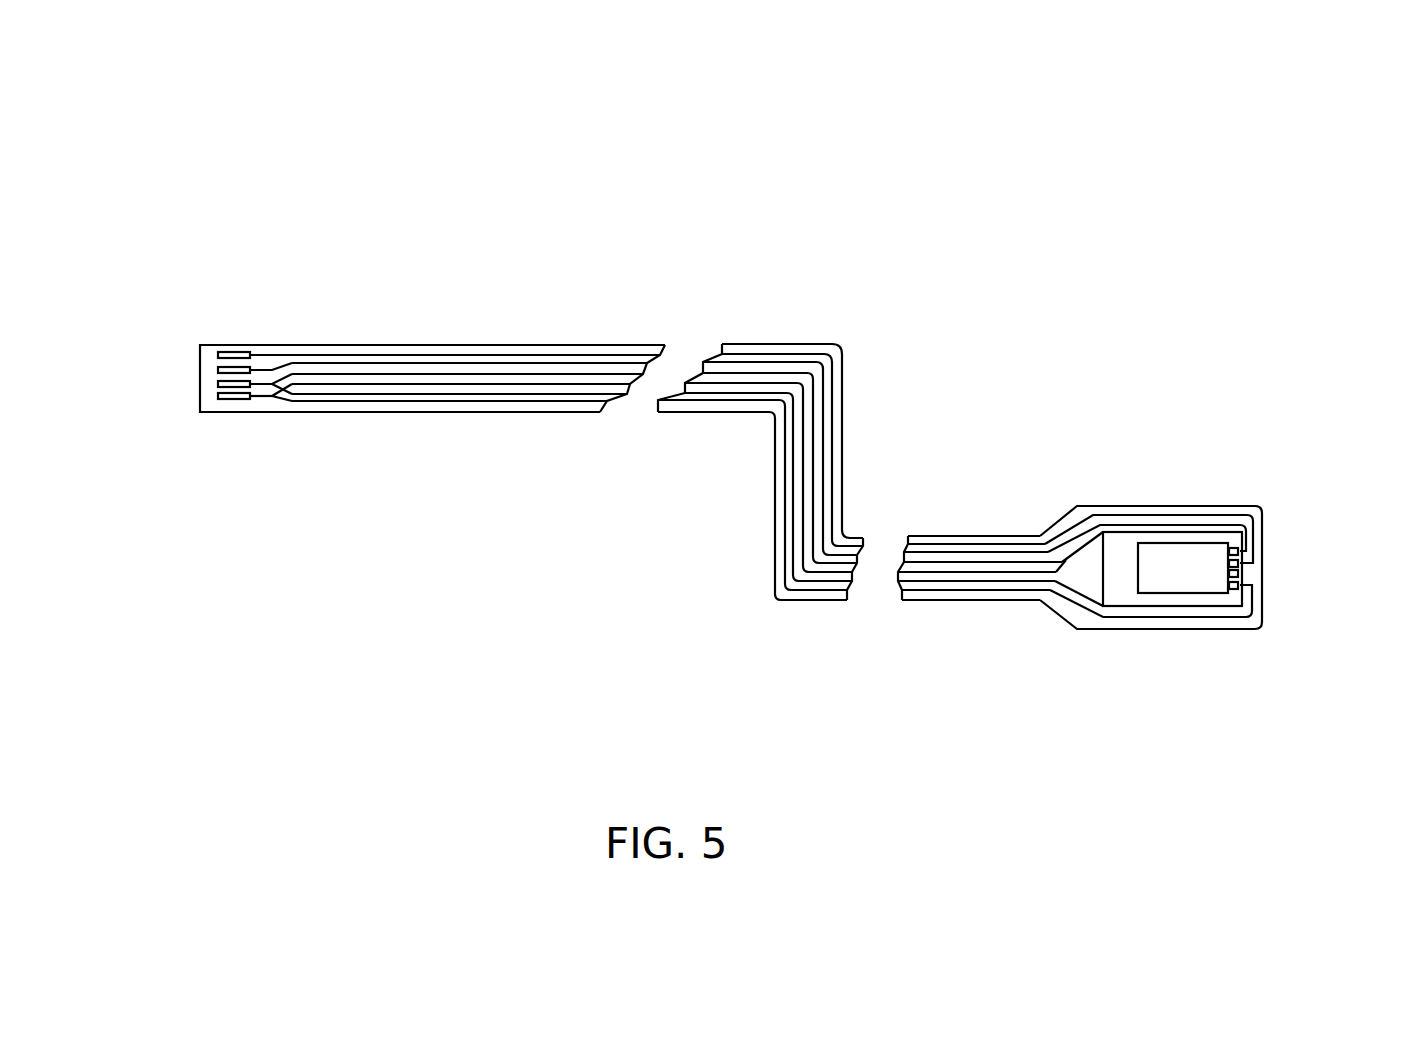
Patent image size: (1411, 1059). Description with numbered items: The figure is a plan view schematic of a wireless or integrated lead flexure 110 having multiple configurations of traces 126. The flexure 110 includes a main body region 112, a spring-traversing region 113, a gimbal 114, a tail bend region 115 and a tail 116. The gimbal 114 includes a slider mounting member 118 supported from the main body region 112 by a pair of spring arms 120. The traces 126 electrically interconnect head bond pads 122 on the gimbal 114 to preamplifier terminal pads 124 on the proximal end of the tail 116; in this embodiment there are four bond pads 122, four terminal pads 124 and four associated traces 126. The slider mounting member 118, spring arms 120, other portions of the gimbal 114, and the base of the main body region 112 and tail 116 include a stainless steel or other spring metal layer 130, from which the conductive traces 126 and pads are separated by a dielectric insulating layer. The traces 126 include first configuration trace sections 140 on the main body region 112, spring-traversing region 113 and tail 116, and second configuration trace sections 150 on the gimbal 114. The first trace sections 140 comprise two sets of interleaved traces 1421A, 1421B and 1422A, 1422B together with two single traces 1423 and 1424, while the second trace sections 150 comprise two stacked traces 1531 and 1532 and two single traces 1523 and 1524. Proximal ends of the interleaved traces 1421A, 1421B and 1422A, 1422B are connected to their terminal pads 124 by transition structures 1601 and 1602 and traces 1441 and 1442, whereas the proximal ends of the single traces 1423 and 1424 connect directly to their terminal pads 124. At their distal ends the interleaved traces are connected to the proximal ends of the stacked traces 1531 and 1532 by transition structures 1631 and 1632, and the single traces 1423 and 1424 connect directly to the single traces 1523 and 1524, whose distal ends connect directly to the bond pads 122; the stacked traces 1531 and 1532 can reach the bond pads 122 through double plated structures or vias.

The integrated lead flexure 110 is at (953, 478).
The main body region 112 is at (1007, 512).
The spring-traversing region 113 is at (922, 530).
The gimbal 114 is at (1157, 506).
The tail bend region 115 is at (800, 338).
The tail 116 is at (623, 340).
The slider mounting member 118 is at (1200, 582).
The spring arms 120 is at (1125, 515).
The head bond pads 122 is at (1240, 563).
The preamplifier terminal pads 124 is at (220, 398).
The traces 126 is at (943, 575).
The spring metal layer 130 is at (1080, 618).
The first configuration trace sections 140 is at (912, 578).
The interleaved trace 1421A is at (375, 412).
The interleaved trace 1421B is at (490, 394).
The interleaved trace 1422A is at (424, 401).
The interleaved trace 1422B is at (568, 376).
The single trace 1423 is at (330, 362).
The single trace 1424 is at (440, 350).
The trace 1441 is at (257, 398).
The trace 1442 is at (255, 355).
The second configuration trace sections 150 is at (1083, 522).
The single trace 1523 is at (1193, 528).
The single trace 1524 is at (1252, 527).
The stacked trace 1531 is at (1240, 577).
The stacked trace 1532 is at (1240, 586).
The transition structure 1601 is at (275, 400).
The transition structure 1602 is at (276, 375).
The transition structure 1631 is at (1053, 592).
The transition structure 1632 is at (1077, 586).